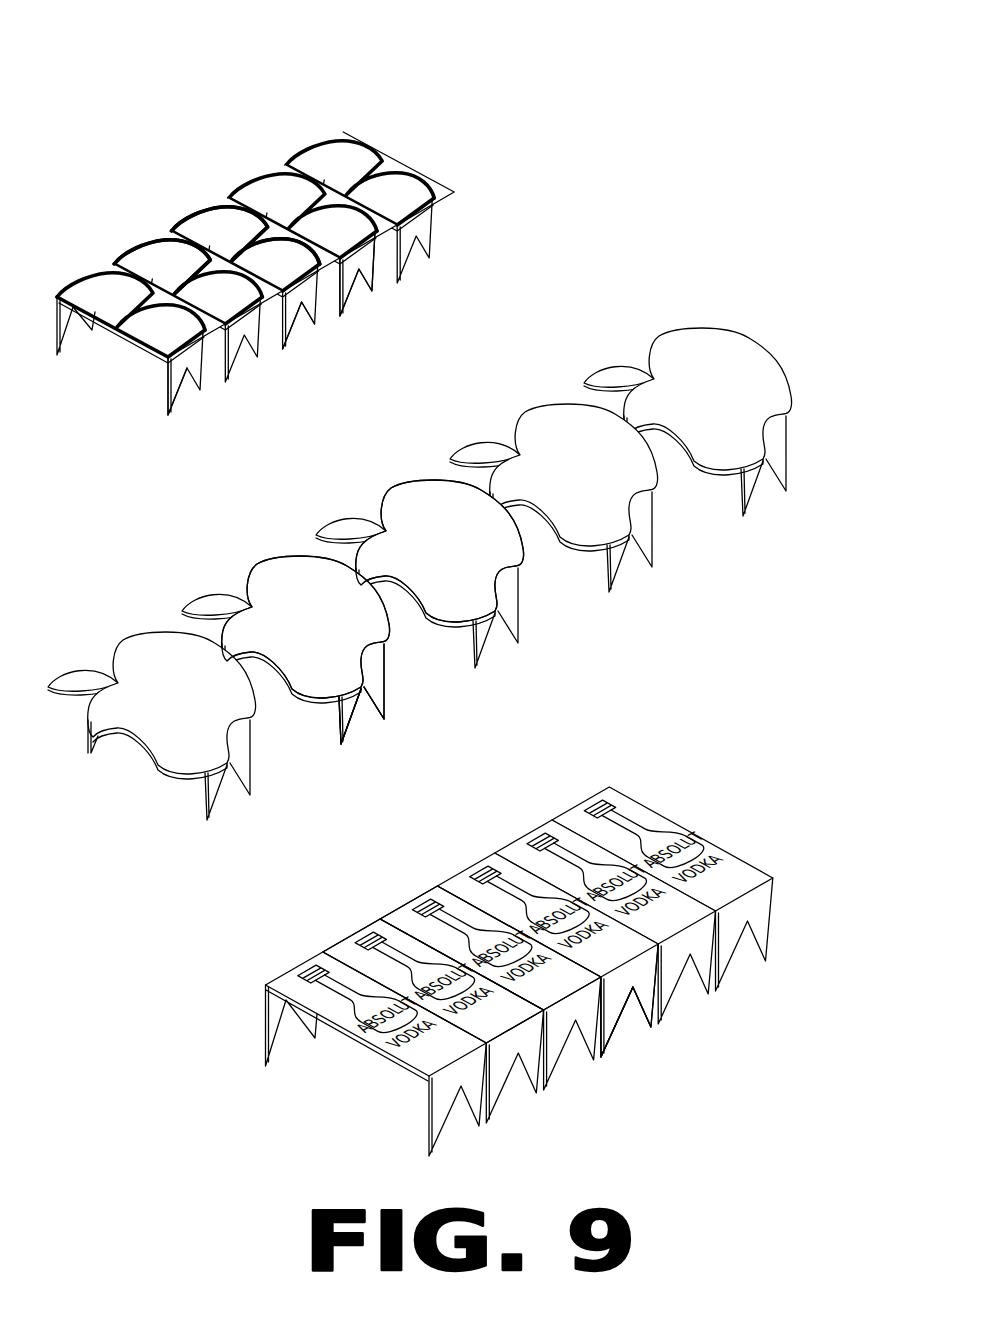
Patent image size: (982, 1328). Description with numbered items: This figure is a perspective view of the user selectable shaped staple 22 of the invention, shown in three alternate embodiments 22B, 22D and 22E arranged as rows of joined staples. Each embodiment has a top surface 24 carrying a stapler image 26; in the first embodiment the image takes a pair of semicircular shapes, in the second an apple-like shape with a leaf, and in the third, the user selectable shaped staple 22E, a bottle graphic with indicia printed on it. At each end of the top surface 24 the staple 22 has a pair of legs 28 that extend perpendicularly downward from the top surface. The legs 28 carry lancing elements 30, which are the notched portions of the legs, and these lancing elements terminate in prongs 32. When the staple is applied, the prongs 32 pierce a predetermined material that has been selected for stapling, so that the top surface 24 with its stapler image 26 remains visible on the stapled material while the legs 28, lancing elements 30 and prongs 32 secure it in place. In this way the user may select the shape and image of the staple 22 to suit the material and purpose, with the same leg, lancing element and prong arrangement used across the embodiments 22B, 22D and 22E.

The user selectable shaped staple 22 is at (345, 135).
The user selectable shaped staple embodiment 22B is at (410, 176).
The user selectable shaped staple embodiment 22D is at (738, 338).
The user selectable shaped staple embodiment 22E is at (661, 815).
The top surface 24 is at (223, 232).
The stapler image 26 is at (140, 245).
The legs 28 is at (347, 278).
The lancing elements 30 is at (292, 337).
The prongs 32 is at (198, 398).